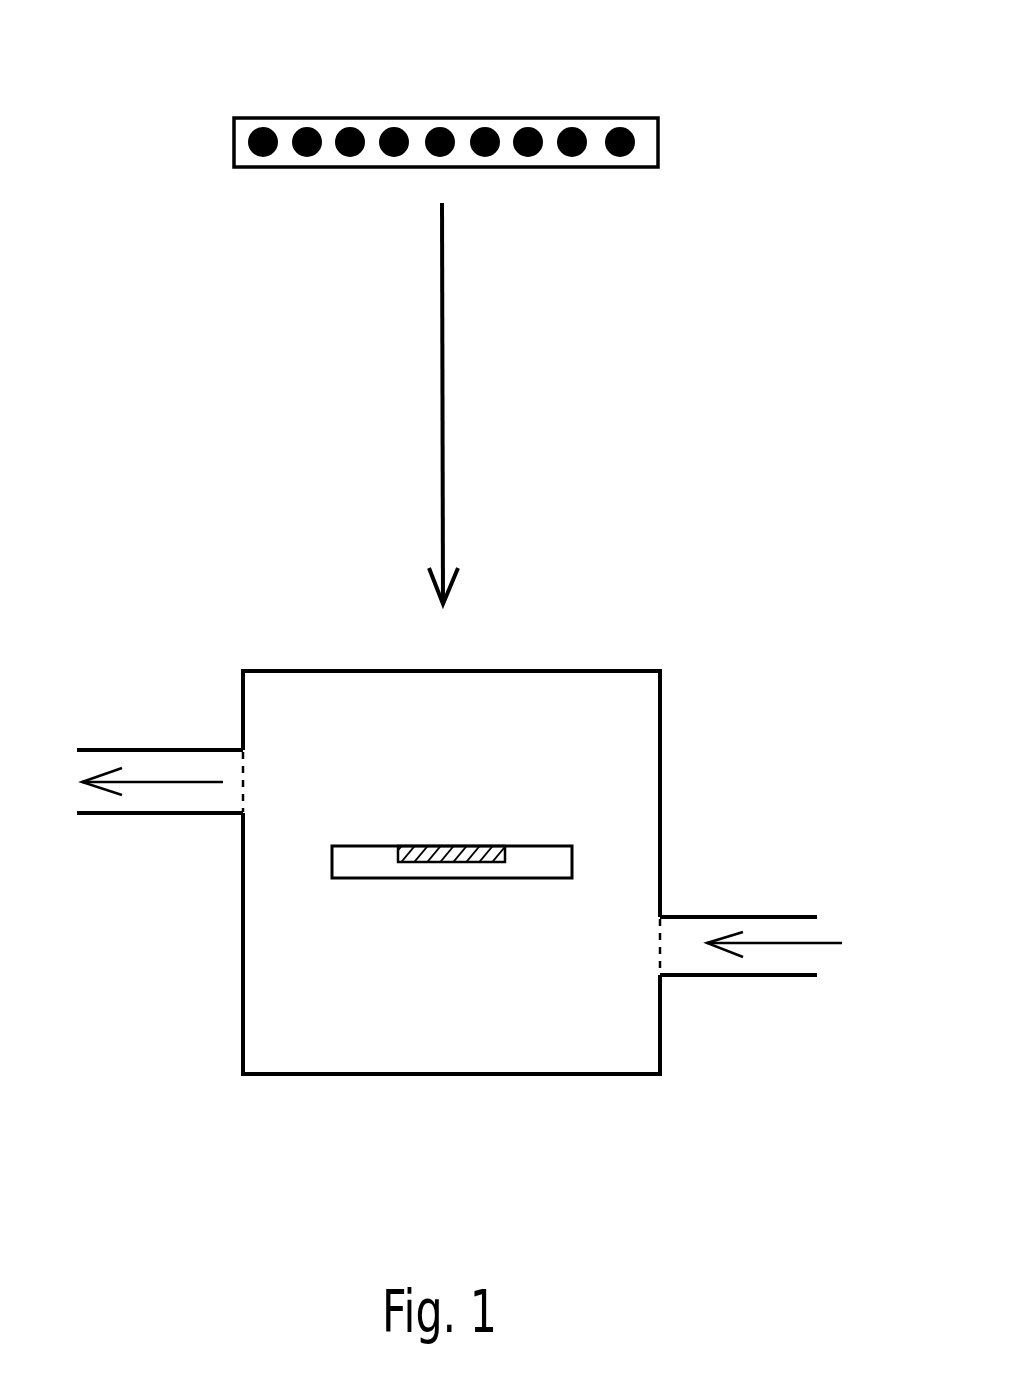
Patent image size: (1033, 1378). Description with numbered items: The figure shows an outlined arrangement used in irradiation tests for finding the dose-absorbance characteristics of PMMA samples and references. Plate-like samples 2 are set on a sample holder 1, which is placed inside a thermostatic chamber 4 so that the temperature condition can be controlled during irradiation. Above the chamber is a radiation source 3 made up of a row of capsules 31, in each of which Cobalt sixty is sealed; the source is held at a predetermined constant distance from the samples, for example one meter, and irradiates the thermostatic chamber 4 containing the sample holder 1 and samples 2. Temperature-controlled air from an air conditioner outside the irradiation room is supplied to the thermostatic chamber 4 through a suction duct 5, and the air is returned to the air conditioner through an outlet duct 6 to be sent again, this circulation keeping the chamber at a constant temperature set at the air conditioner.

The sample holder 1 is at (495, 878).
The plate-like samples 2 is at (455, 843).
The radiation source 3 is at (658, 143).
The capsules 31 is at (393, 128).
The thermostatic chamber 4 is at (660, 743).
The suction duct 5 is at (763, 975).
The outlet duct 6 is at (167, 813).